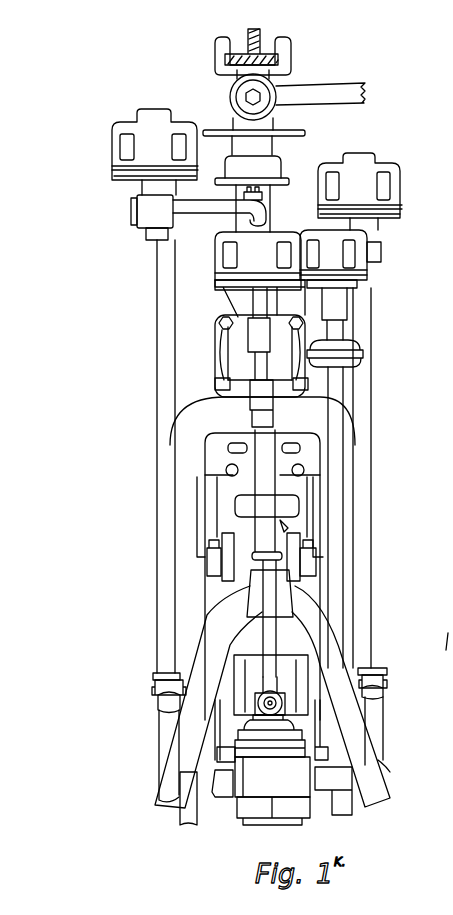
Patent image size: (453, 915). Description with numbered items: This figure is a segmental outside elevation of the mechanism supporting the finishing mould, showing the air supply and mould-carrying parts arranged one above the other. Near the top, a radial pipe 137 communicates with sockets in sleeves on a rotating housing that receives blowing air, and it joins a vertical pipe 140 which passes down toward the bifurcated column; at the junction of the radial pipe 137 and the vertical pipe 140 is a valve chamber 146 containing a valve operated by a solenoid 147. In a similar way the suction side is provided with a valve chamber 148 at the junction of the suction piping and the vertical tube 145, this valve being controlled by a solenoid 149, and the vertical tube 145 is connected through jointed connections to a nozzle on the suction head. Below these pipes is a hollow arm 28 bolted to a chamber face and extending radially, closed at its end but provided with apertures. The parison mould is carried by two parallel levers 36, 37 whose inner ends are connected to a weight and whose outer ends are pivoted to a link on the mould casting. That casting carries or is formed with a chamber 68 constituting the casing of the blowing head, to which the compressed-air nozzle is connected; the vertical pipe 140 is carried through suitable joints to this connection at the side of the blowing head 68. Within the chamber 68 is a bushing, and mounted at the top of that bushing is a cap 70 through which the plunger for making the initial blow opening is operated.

The solenoid 147 is at (120, 138).
The valve chamber 146 is at (148, 216).
The radial pipe 137 is at (213, 207).
The solenoid 149 is at (388, 166).
The valve chamber 148 is at (380, 253).
The vertical tube 145 is at (362, 332).
The hollow arm 28 is at (220, 371).
The vertical pipe 140 is at (166, 440).
The lever 36 is at (256, 527).
The lever 37 is at (257, 643).
The cap 70 is at (258, 741).
The chamber 68 is at (245, 790).